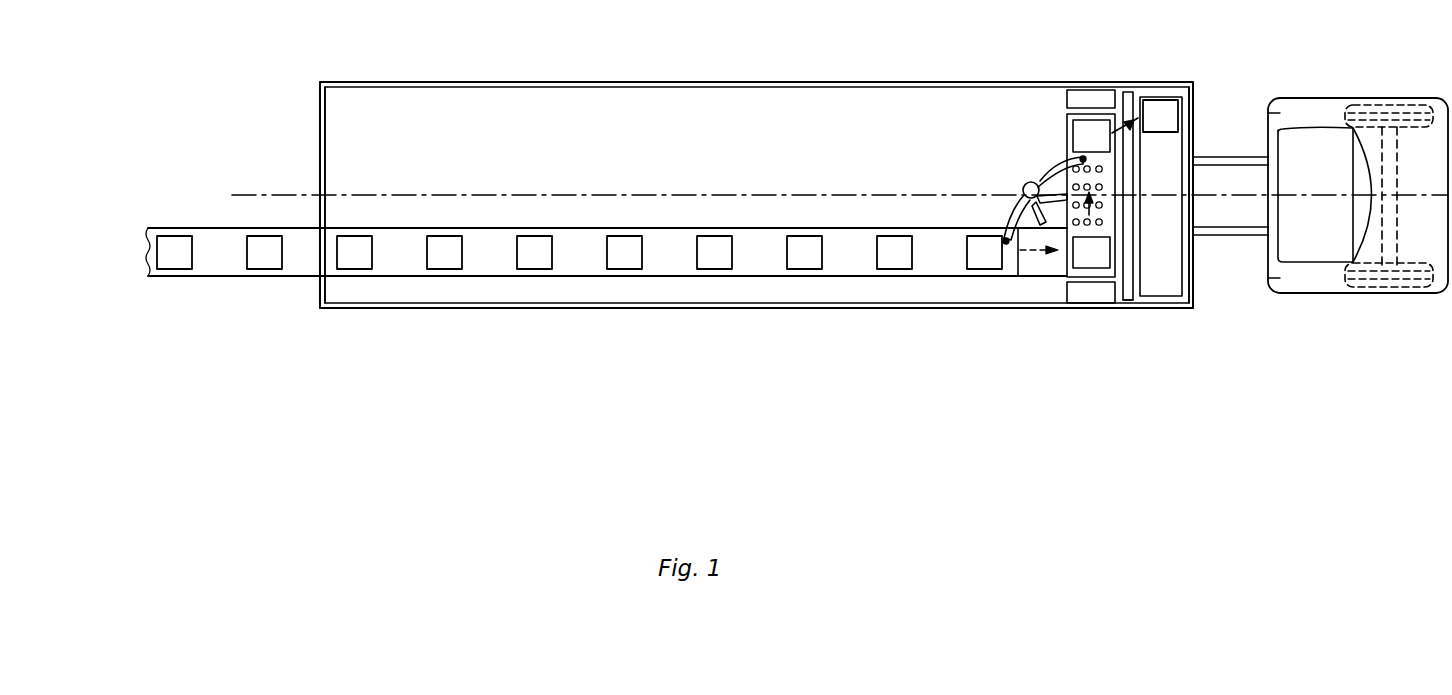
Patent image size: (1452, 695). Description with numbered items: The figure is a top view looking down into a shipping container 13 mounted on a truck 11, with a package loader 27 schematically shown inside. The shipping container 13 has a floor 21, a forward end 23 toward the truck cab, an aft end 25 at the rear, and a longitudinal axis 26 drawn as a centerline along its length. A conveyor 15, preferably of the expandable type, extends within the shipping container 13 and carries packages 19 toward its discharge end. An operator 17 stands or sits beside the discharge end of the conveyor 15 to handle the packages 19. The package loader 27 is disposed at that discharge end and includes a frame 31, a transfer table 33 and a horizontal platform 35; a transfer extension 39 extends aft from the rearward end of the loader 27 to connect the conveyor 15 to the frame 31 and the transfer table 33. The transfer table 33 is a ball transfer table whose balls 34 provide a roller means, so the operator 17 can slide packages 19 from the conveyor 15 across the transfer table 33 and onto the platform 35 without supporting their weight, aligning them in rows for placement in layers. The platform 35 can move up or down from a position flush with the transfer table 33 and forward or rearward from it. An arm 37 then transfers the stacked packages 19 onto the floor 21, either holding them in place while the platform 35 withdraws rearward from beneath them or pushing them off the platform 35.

The truck 11 is at (1232, 368).
The shipping container 13 is at (935, 88).
The conveyor 15 is at (478, 262).
The operator 17 is at (1028, 181).
The packages 19 is at (617, 256).
The floor 21 is at (827, 108).
The forward end 23 is at (1185, 115).
The aft end 25 is at (352, 102).
The longitudinal axis 26 is at (302, 194).
The package loader 27 is at (1133, 78).
The frame 31 is at (1088, 100).
The transfer table 33 is at (1103, 223).
The balls 34 is at (1103, 206).
The horizontal platform 35 is at (1167, 157).
The arm 37 is at (1130, 292).
The transfer extension 39 is at (1038, 263).